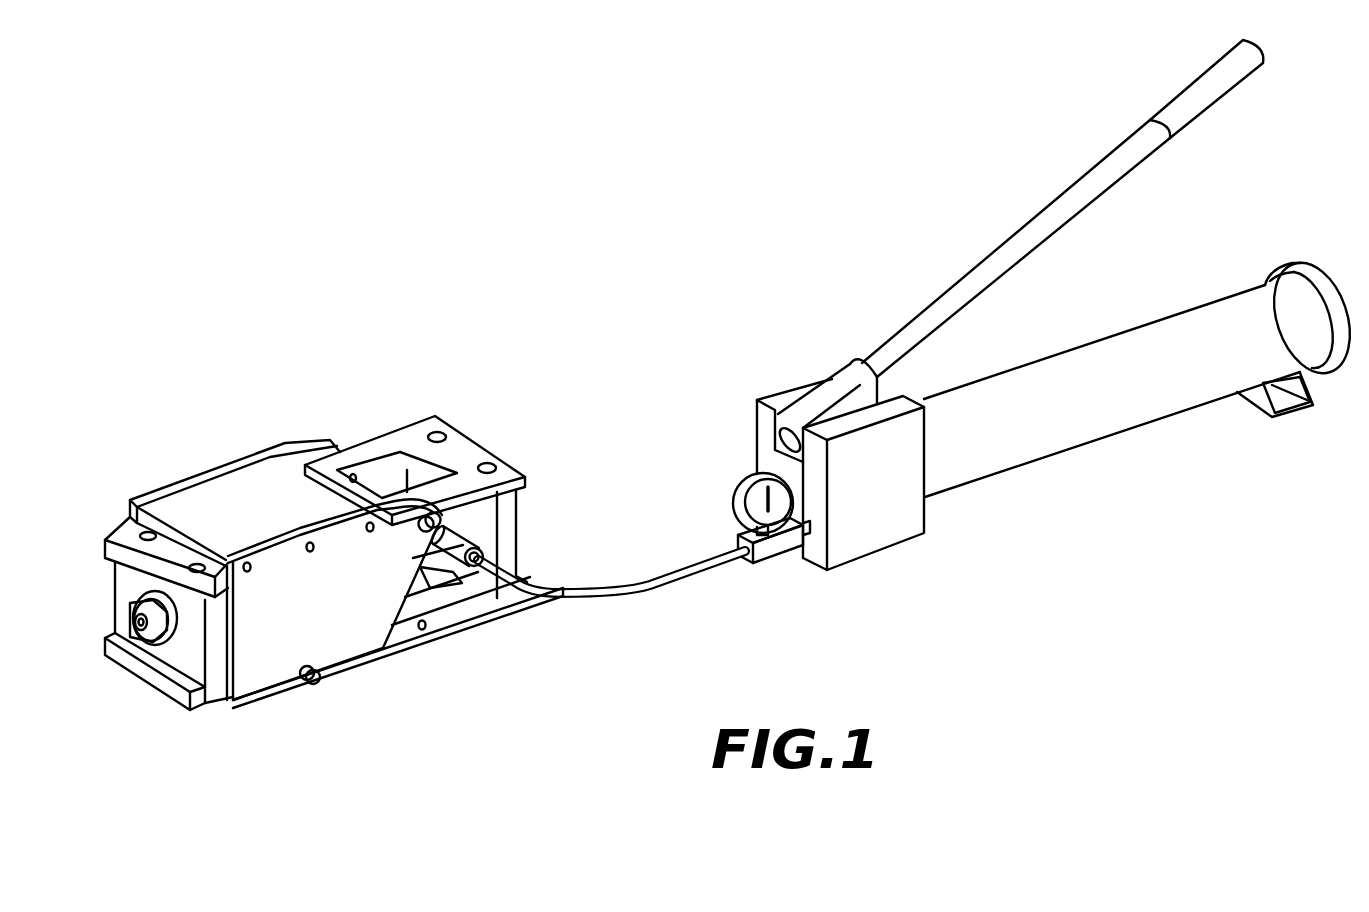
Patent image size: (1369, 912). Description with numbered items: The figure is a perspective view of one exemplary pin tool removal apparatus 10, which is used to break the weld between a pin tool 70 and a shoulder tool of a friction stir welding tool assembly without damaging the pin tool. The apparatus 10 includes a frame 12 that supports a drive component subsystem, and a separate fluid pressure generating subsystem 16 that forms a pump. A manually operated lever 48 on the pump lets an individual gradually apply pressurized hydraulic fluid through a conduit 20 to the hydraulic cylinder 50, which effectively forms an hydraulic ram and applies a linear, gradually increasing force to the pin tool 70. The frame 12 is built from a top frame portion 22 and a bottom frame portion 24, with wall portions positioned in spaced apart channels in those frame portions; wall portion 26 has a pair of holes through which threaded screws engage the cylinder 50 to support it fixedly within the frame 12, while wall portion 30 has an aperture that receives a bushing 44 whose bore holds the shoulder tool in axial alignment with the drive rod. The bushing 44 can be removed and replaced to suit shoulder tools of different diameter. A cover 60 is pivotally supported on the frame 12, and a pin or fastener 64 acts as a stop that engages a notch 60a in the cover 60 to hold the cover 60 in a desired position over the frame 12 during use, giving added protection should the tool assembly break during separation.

The pin tool removal apparatus 10 is at (703, 399).
The frame 12 is at (448, 603).
The fluid pressure generating subsystem 16 is at (1095, 444).
The conduit 20 is at (645, 590).
The top frame portion 22 is at (402, 437).
The bottom frame portion 24 is at (405, 636).
The wall portion 26 is at (503, 554).
The wall portion 30 is at (185, 663).
The bushing 44 is at (131, 602).
The manually operated lever 48 is at (1068, 193).
The hydraulic cylinder 50 is at (518, 520).
The cover 60 is at (334, 611).
The notch 60a is at (305, 667).
The pin or fastener 64 is at (316, 681).
The pin tool 70 is at (135, 623).